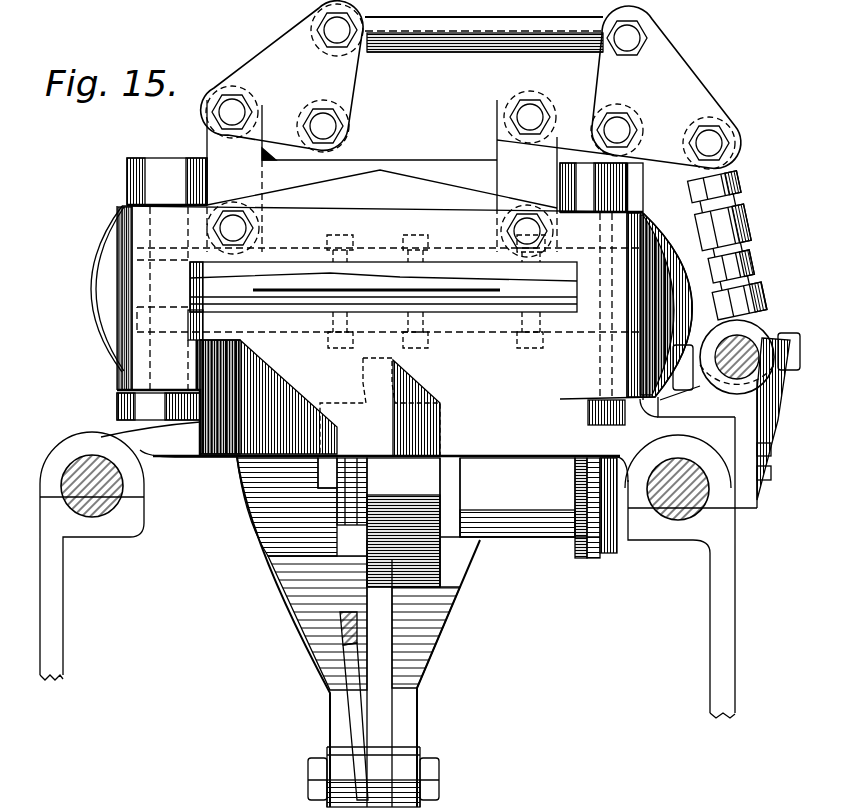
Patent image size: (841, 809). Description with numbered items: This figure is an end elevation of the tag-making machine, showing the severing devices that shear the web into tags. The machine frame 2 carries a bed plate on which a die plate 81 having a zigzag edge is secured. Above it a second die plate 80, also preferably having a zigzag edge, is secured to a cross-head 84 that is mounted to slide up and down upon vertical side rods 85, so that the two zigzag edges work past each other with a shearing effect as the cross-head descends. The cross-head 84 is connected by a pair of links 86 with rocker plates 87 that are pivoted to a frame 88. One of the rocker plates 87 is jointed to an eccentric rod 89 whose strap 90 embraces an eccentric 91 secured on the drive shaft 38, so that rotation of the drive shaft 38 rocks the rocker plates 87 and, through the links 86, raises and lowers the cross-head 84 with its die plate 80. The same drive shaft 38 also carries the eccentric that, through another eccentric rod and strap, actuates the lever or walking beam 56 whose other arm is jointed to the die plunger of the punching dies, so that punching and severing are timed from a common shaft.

The frame 2 is at (76, 470).
The drive shaft 38 is at (748, 355).
The lever or walking beam 56 is at (545, 805).
The die plate 80 is at (190, 267).
The die plate 81 is at (308, 330).
The cross-head 84 is at (424, 190).
The vertical side rods 85 is at (165, 406).
The links 86 is at (222, 153).
The rocker plates 87 is at (290, 58).
The frame 88 is at (392, 161).
The eccentric rod 89 is at (738, 236).
The strap 90 is at (750, 342).
The eccentric 91 is at (774, 410).